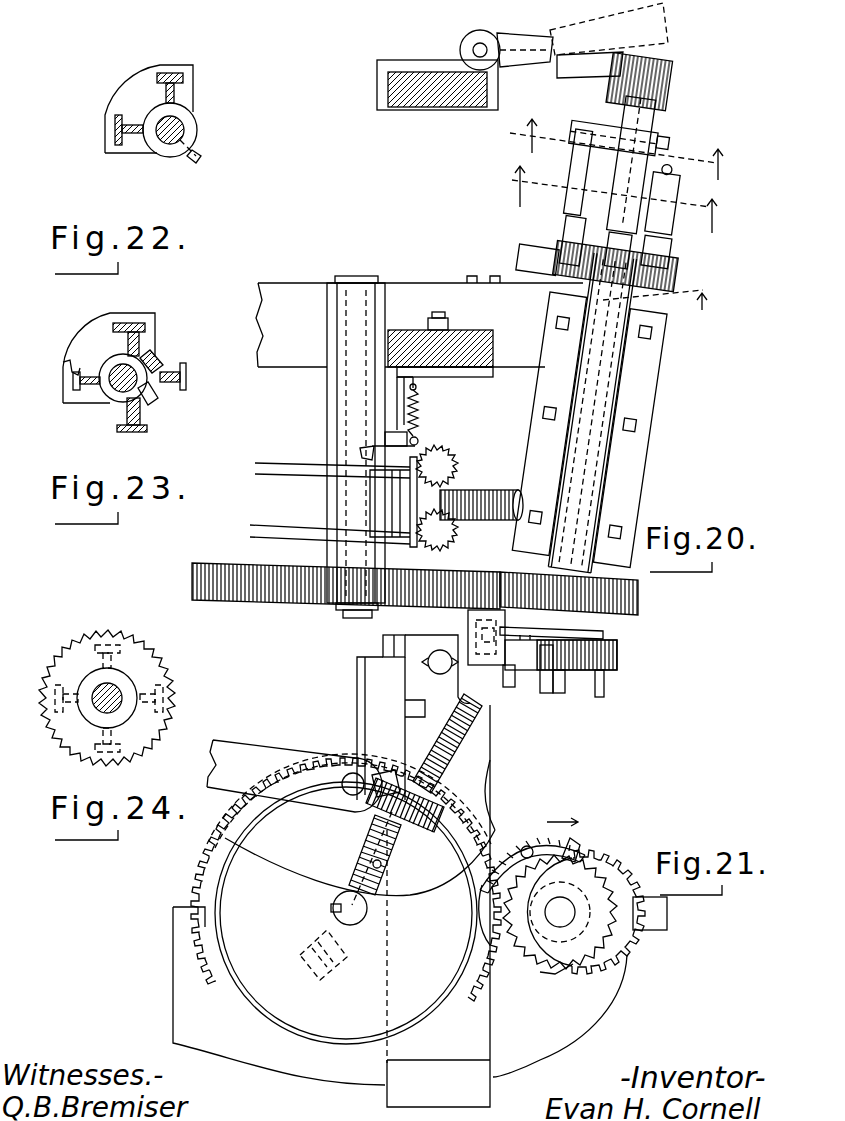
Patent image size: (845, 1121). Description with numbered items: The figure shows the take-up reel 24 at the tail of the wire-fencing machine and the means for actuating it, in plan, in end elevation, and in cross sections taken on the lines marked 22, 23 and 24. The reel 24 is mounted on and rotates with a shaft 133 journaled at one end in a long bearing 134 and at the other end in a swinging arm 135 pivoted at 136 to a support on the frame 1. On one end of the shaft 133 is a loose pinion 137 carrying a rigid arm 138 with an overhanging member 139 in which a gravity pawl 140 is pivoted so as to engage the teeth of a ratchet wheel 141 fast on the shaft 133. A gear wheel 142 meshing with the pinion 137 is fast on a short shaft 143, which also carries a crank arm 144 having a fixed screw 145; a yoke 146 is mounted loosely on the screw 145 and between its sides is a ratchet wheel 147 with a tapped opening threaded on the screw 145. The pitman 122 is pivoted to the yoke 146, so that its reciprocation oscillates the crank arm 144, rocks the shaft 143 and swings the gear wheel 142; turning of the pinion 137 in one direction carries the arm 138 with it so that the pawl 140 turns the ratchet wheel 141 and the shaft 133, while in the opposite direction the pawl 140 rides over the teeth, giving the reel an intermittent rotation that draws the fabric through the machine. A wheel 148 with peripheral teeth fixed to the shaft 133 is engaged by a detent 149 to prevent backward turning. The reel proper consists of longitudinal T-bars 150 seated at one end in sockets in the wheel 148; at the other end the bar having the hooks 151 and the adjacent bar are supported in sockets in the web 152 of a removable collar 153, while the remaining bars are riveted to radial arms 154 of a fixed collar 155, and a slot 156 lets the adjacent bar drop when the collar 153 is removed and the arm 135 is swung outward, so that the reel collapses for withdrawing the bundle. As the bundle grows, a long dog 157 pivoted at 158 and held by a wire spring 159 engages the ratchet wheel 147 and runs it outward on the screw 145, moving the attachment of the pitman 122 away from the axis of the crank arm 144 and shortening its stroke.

In FIG. 20, the frame 1 is at (300, 342).
In FIG. 20, the crimp 22 is at (525, 133).
In FIG. 20, the roller 23 is at (512, 183).
In FIG. 20, the reel 24 is at (708, 302).
In FIG. 20, the pitman 122 is at (293, 490).
In FIG. 21, the pitman 122 is at (294, 776).
In FIG. 22, the shaft 133 is at (186, 128).
In FIG. 23, the shaft 133 is at (118, 398).
In FIG. 24, the shaft 133 is at (113, 691).
In FIG. 20, the shaft 133 is at (556, 692).
In FIG. 21, the shaft 133 is at (562, 916).
In FIG. 20, the long bearing 134 is at (606, 390).
In FIG. 20, the swinging arm 135 is at (558, 72).
In FIG. 20, the pivot 136 is at (470, 50).
In FIG. 20, the loose pinion 137 is at (636, 602).
In FIG. 21, the loose pinion 137 is at (620, 957).
In FIG. 20, the arm 138 is at (605, 634).
In FIG. 20, the overhanging member 139 is at (478, 624).
In FIG. 21, the overhanging member 139 is at (520, 836).
In FIG. 20, the gravity pawl 140 is at (515, 687).
In FIG. 21, the gravity pawl 140 is at (585, 839).
In FIG. 20, the ratchet wheel 141 is at (618, 660).
In FIG. 21, the ratchet wheel 141 is at (606, 856).
In FIG. 20, the gear wheel 142 is at (194, 580).
In FIG. 21, the gear wheel 142 is at (214, 936).
In FIG. 20, the short shaft 143 is at (354, 613).
In FIG. 21, the short shaft 143 is at (360, 912).
In FIG. 21, the crank arm 144 is at (364, 852).
In FIG. 20, the fixed screw 145 is at (486, 490).
In FIG. 21, the fixed screw 145 is at (450, 760).
In FIG. 20, the yoke 146 is at (452, 533).
In FIG. 21, the yoke 146 is at (383, 772).
In FIG. 20, the ratchet wheel 147 is at (440, 453).
In FIG. 21, the ratchet wheel 147 is at (425, 835).
In FIG. 24, the toothed wheel 148 is at (60, 650).
In FIG. 20, the toothed wheel 148 is at (676, 280).
In FIG. 20, the detent 149 is at (545, 255).
In FIG. 22, the T-bars 150 is at (118, 133).
In FIG. 23, the T-bars 150 is at (188, 376).
In FIG. 20, the T-bars 150 is at (580, 162).
In FIG. 23, the hooks 151 is at (66, 362).
In FIG. 20, the hooks 151 is at (572, 218).
In FIG. 22, the web 152 is at (128, 83).
In FIG. 23, the web 152 is at (103, 324).
In FIG. 20, the web 152 is at (595, 128).
In FIG. 22, the removable collar 153 is at (190, 116).
In FIG. 23, the removable collar 153 is at (112, 358).
In FIG. 20, the removable collar 153 is at (665, 133).
In FIG. 23, the radial arms 154 is at (150, 396).
In FIG. 20, the radial arms 154 is at (673, 170).
In FIG. 23, the fixed collar 155 is at (158, 370).
In FIG. 23, the slot 156 is at (150, 340).
In FIG. 20, the dog 157 is at (386, 447).
In FIG. 21, the dog 157 is at (366, 697).
In FIG. 20, the pivot 158 is at (395, 444).
In FIG. 21, the pivot 158 is at (400, 630).
In FIG. 20, the wire spring 159 is at (418, 406).
In FIG. 21, the wire spring 159 is at (437, 675).